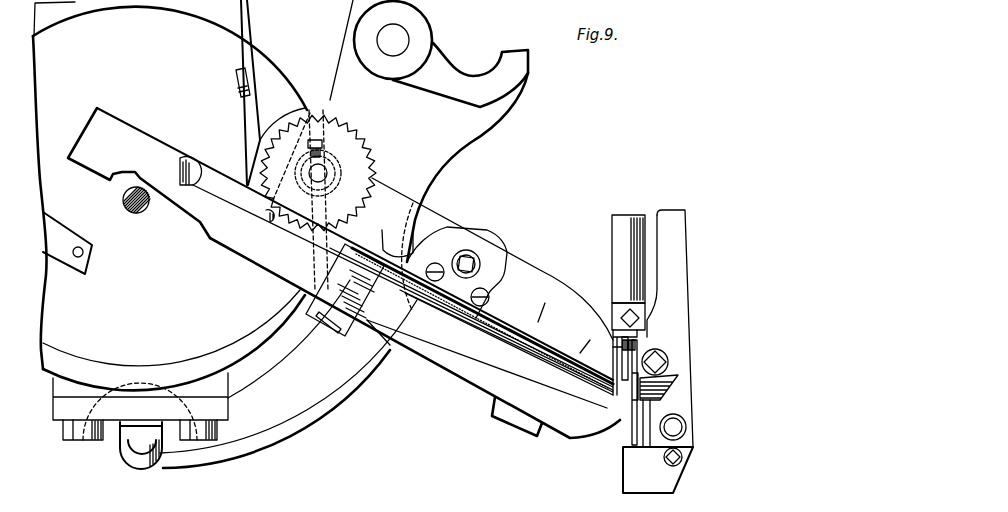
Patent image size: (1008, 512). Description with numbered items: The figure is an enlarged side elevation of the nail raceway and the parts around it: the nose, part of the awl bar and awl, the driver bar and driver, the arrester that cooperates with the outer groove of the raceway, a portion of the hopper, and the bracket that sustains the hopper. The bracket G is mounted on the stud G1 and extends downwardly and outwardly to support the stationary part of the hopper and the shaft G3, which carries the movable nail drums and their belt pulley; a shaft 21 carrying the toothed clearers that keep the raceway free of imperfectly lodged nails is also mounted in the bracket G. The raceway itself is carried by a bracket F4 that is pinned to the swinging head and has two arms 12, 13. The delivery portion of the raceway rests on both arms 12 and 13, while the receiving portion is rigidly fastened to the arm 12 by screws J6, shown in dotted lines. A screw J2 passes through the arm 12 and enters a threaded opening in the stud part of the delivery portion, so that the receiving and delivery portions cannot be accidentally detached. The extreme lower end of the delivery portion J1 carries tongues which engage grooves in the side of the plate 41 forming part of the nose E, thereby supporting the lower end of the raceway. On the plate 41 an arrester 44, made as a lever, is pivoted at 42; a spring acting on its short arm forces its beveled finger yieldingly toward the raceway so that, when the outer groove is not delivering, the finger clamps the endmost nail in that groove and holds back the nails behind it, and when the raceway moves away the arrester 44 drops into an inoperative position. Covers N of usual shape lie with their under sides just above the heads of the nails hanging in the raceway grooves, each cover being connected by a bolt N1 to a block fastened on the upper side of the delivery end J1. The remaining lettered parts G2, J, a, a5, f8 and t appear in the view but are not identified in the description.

The bracket G is at (342, 78).
The stud G1 is at (390, 40).
The strip lever G2 is at (237, 20).
The shaft G3 is at (136, 213).
The carrier arm J is at (277, 270).
The delivery portion of the raceway J1 is at (482, 378).
The screw J2 is at (332, 340).
The screws J6 is at (395, 352).
The covers N is at (502, 339).
The bolt N1 is at (476, 260).
The bracket F4 is at (533, 276).
The post a is at (627, 213).
The lug a5 is at (630, 352).
The frame bar f8 is at (673, 300).
The pin t is at (674, 431).
The nose E is at (678, 484).
The arm 12 is at (270, 12).
The arm 13 is at (522, 432).
The shaft 21 is at (318, 140).
The plate 41 is at (637, 421).
The pivot 42 is at (612, 340).
The arrester 44 is at (633, 358).